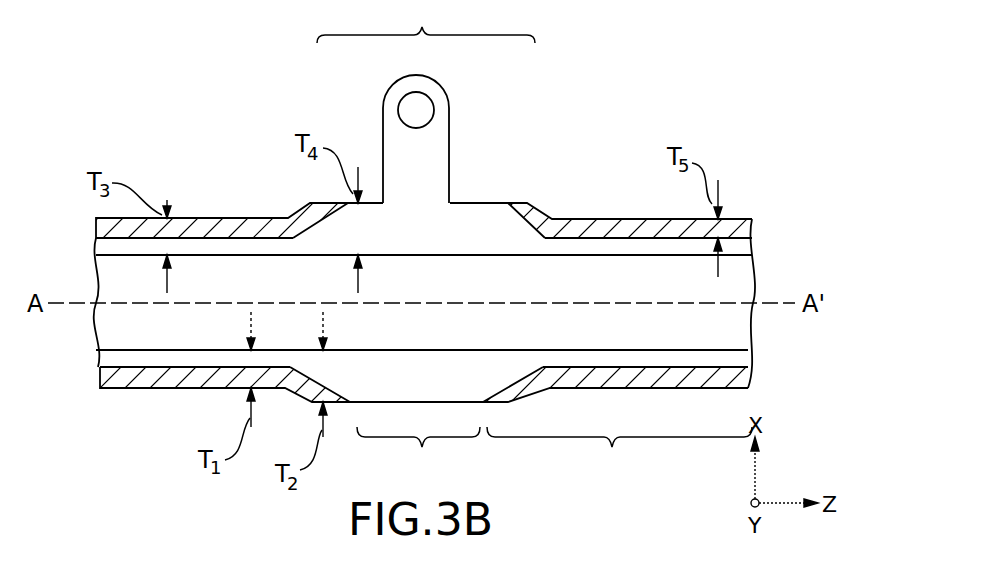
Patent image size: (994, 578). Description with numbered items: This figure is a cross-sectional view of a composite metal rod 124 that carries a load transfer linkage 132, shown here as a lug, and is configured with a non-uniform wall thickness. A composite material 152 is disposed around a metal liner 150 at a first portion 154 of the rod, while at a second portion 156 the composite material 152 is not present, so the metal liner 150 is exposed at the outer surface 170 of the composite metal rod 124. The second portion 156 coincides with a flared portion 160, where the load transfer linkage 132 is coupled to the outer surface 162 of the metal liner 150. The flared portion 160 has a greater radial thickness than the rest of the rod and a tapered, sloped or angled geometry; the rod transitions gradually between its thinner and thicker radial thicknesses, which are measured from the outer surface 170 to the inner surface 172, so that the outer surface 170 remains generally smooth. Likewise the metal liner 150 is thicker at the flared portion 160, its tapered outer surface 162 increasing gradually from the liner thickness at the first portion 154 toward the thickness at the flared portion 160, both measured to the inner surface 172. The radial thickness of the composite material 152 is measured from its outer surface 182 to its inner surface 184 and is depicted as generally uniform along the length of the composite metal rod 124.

The composite metal rod 124 is at (152, 135).
The load transfer linkage 132 is at (440, 140).
The metal liner 150 is at (503, 230).
The composite material 152 is at (625, 228).
The first portion 154 is at (619, 453).
The second portion 156 is at (418, 452).
The flared portion 160 is at (426, 21).
The outer surface of metal liner 162 is at (213, 238).
The outer surface 170 is at (190, 390).
The inner surface 172 is at (213, 256).
The outer surface of composite material 182 is at (744, 220).
The inner surface of composite material 184 is at (690, 240).